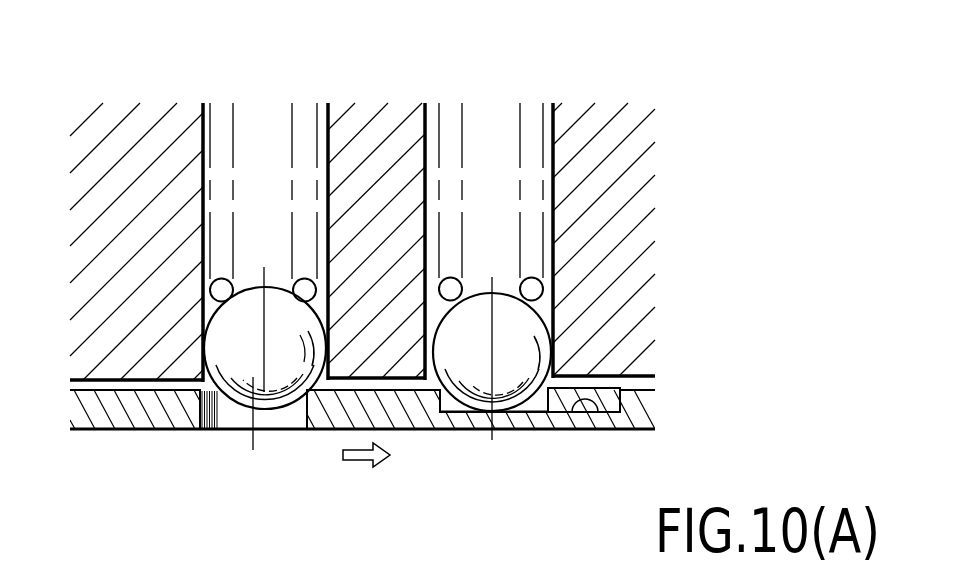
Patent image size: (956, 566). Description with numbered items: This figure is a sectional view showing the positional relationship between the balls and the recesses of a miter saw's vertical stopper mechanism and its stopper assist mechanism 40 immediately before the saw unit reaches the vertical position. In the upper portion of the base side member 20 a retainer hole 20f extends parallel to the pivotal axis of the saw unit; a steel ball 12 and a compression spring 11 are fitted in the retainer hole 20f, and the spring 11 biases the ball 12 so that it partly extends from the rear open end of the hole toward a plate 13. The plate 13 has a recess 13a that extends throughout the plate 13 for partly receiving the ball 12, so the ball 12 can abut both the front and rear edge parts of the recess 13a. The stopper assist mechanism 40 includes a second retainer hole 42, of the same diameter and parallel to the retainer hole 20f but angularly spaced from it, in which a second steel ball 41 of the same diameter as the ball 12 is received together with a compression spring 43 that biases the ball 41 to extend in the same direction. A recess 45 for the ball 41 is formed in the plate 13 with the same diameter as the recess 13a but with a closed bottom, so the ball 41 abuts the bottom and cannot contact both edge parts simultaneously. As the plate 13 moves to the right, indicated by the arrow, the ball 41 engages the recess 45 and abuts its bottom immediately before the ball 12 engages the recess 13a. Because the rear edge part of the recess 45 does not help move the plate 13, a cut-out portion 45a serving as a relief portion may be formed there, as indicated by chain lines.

The base side member 20 is at (152, 158).
The retainer hole 20f is at (203, 140).
The compression spring 11 is at (298, 147).
The ball 12 is at (282, 372).
The plate 13 is at (107, 408).
The recess 13a is at (216, 405).
The stopper assist mechanism 40 is at (567, 250).
The retainer hole 42 is at (427, 143).
The compression spring 43 is at (530, 160).
The ball 41 is at (514, 372).
The recess 45 is at (441, 398).
The cut-out portion 45a is at (597, 413).